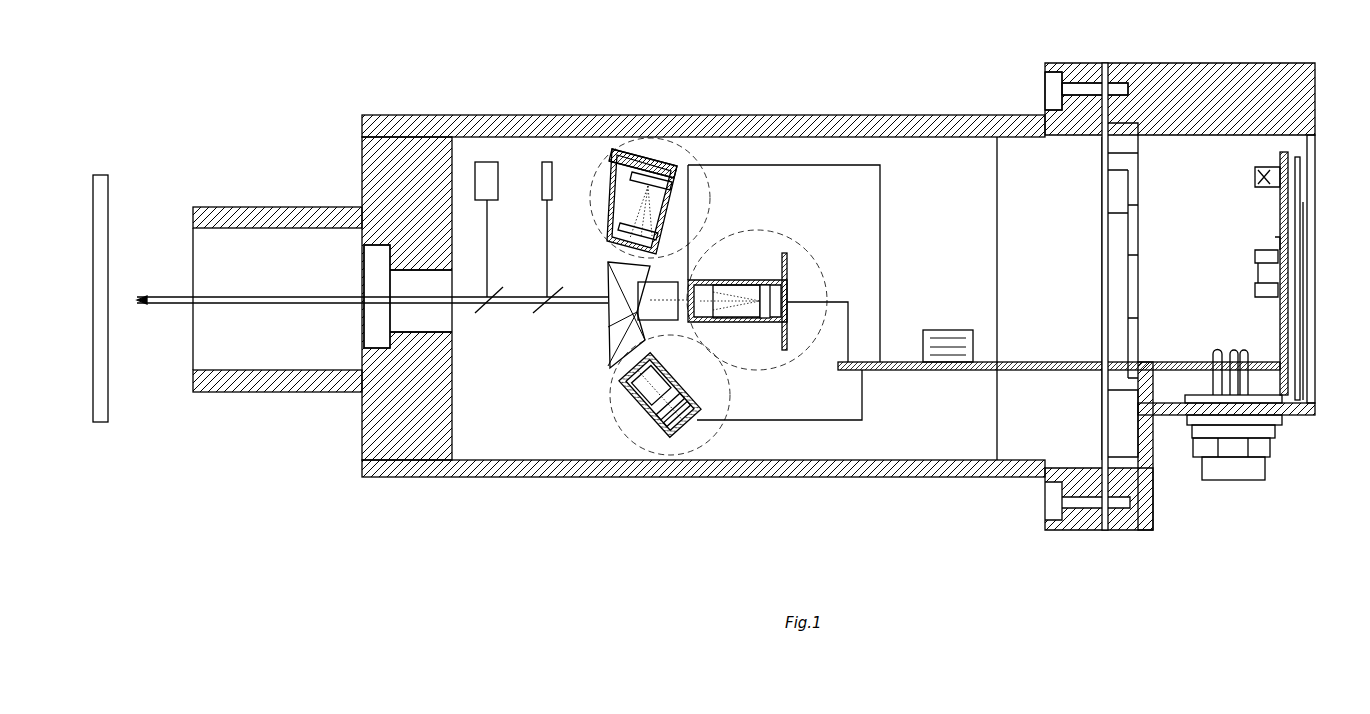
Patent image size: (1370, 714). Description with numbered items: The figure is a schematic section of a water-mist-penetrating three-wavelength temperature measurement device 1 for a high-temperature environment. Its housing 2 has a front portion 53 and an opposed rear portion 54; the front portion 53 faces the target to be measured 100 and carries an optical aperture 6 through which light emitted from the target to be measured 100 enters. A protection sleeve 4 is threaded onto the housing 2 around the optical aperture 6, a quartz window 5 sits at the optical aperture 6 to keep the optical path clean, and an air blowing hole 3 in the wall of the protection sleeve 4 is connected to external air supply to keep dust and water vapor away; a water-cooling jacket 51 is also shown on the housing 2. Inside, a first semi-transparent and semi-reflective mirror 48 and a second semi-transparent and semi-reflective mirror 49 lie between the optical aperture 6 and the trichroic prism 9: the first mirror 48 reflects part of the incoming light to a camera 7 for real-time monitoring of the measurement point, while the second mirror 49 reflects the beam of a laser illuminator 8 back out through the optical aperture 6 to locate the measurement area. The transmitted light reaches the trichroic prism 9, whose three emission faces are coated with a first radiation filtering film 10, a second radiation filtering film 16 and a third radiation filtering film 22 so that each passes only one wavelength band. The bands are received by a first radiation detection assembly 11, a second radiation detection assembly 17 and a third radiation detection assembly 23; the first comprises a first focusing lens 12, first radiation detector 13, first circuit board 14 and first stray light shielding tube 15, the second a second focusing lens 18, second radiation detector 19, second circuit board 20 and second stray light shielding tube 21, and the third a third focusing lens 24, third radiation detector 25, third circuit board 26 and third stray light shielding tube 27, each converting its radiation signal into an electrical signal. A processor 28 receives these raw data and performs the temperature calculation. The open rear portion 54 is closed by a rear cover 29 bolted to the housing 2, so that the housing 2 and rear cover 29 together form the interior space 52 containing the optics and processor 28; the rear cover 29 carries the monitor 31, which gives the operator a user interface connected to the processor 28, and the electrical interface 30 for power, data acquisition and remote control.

The water-mist-penetrating three-wavelength temperature measurement device 1 is at (728, 108).
The housing 2 is at (710, 267).
The air blowing hole 3 is at (275, 207).
The protection sleeve 4 is at (275, 392).
The quartz window 5 is at (388, 262).
The optical aperture 6 is at (440, 290).
The camera 7 is at (498, 182).
The laser illuminator 8 is at (552, 182).
The trichroic prism 9 is at (606, 338).
The first radiation filtering film 10 is at (637, 198).
The first radiation detection assembly 11 is at (603, 218).
The first focusing lens 12 is at (660, 232).
The first radiation detector 13 is at (672, 188).
The first circuit board 14 is at (638, 163).
The first stray light shielding tube 15 is at (637, 176).
The second radiation filtering film 16 is at (678, 318).
The second radiation detection assembly 17 is at (757, 283).
The second focusing lens 18 is at (724, 286).
The second radiation detector 19 is at (767, 318).
The second circuit board 20 is at (782, 268).
The second stray light shielding tube 21 is at (712, 322).
The third radiation filtering film 22 is at (618, 381).
The third radiation detection assembly 23 is at (643, 386).
The third focusing lens 24 is at (666, 370).
The third radiation detector 25 is at (660, 424).
The third circuit board 26 is at (686, 398).
The third stray light shielding tube 27 is at (643, 409).
The processor 28 is at (948, 330).
The rear cover 29 is at (1185, 63).
The electrical interface 30 is at (1268, 462).
The monitor 31 is at (1313, 232).
The first semi-transparent and semi-reflective mirror 48 is at (478, 312).
The second semi-transparent and semi-reflective mirror 49 is at (540, 312).
The water-cooling jacket 51 is at (520, 115).
The interior space 52 is at (920, 178).
The front portion 53 is at (362, 155).
The rear portion 54 is at (1058, 63).
The target to be measured 100 is at (108, 238).